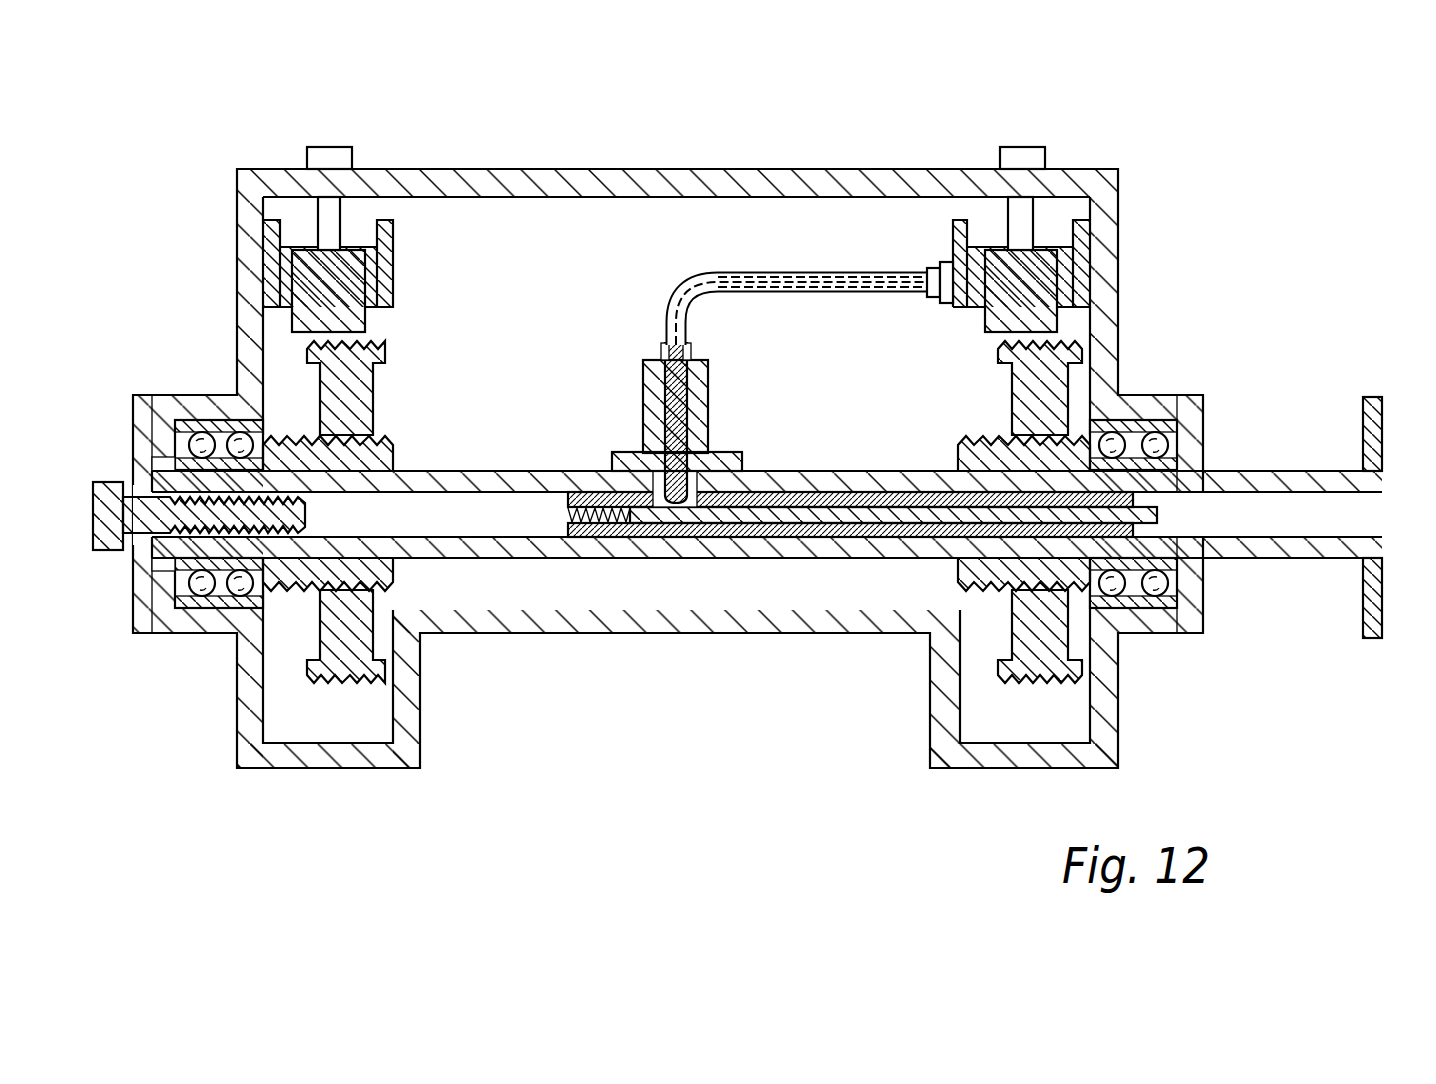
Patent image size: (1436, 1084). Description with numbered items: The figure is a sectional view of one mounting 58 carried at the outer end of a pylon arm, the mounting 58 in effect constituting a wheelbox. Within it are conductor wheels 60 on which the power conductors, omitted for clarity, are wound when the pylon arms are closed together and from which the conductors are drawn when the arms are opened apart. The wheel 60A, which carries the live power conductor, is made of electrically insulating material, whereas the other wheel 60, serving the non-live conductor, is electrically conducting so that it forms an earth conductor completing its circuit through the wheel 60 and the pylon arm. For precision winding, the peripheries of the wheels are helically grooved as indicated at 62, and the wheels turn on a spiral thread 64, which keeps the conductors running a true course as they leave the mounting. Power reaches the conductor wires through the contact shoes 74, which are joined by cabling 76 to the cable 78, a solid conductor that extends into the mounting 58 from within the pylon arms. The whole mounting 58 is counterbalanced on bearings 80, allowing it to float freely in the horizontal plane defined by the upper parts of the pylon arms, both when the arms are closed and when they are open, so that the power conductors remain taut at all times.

The mounting 58 is at (755, 440).
The conductor wheel 60 is at (370, 643).
The conductor wheel 60A is at (1067, 643).
The helical groove 62 is at (1060, 340).
The spiral thread 64 is at (958, 606).
The contact shoe 74 is at (1042, 282).
The cabling 76 is at (778, 282).
The cable 78 is at (1160, 512).
The bearing 80 is at (1142, 425).